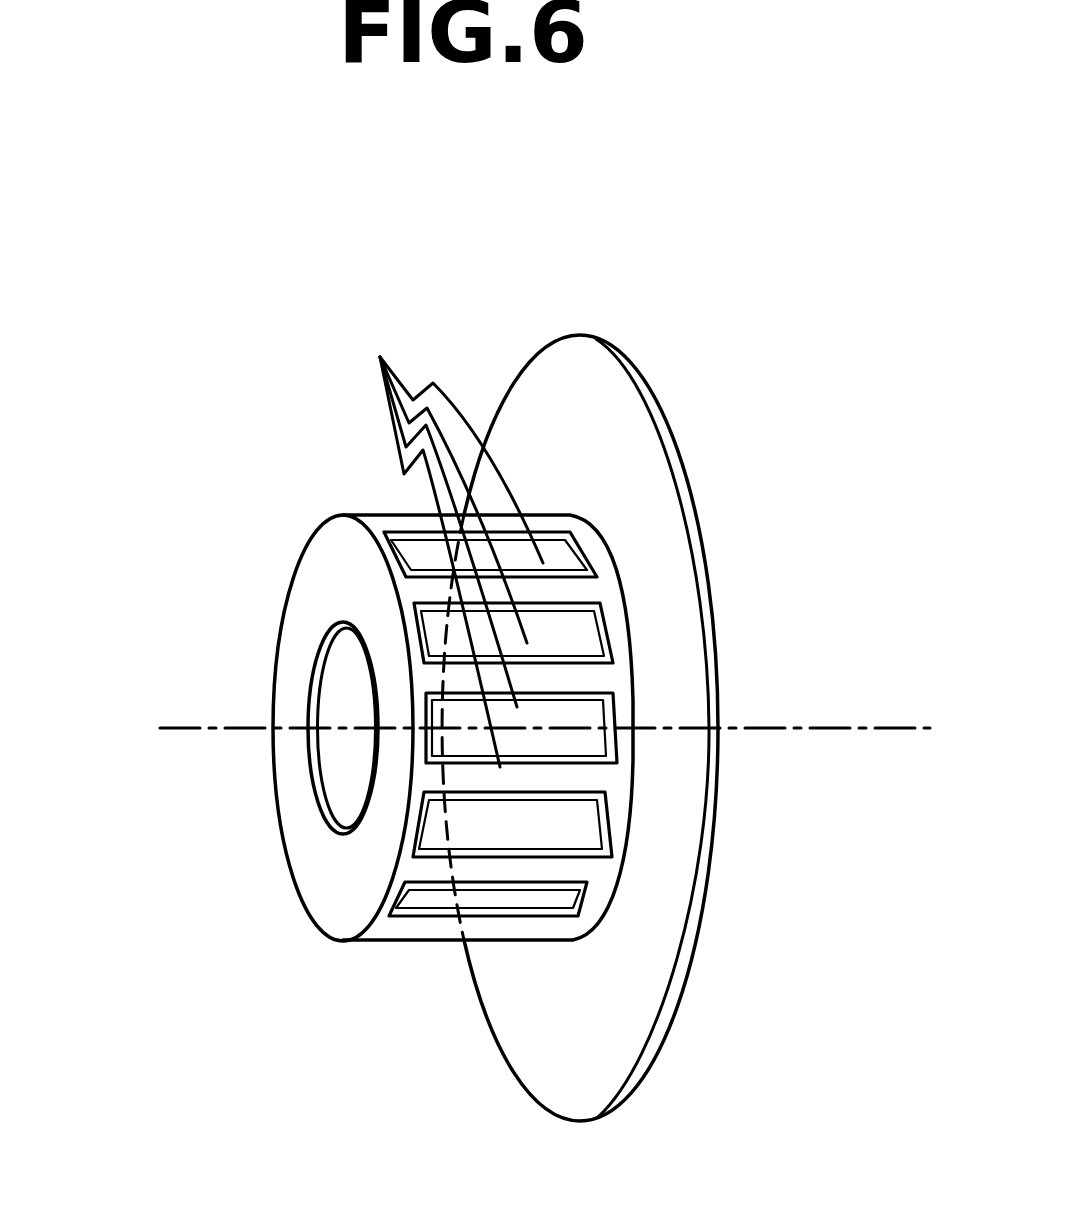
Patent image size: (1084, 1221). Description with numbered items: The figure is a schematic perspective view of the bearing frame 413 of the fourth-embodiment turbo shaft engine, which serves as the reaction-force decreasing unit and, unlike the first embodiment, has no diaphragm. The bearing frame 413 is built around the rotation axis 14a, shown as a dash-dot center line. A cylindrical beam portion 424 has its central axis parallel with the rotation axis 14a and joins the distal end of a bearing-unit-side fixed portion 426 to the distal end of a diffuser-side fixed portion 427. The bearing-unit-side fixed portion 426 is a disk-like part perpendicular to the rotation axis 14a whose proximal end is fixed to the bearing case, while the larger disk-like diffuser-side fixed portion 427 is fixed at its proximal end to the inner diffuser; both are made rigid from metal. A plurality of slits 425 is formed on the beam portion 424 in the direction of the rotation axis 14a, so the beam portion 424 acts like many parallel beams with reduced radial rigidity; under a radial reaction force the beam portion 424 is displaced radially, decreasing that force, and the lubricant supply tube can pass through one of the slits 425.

The bearing frame 413 is at (617, 209).
The beam portion 424 is at (413, 582).
The slits 425 is at (381, 358).
The bearing-unit-side fixed portion 426 is at (323, 876).
The diffuser-side fixed portion 427 is at (670, 587).
The rotation axis 14a is at (230, 735).